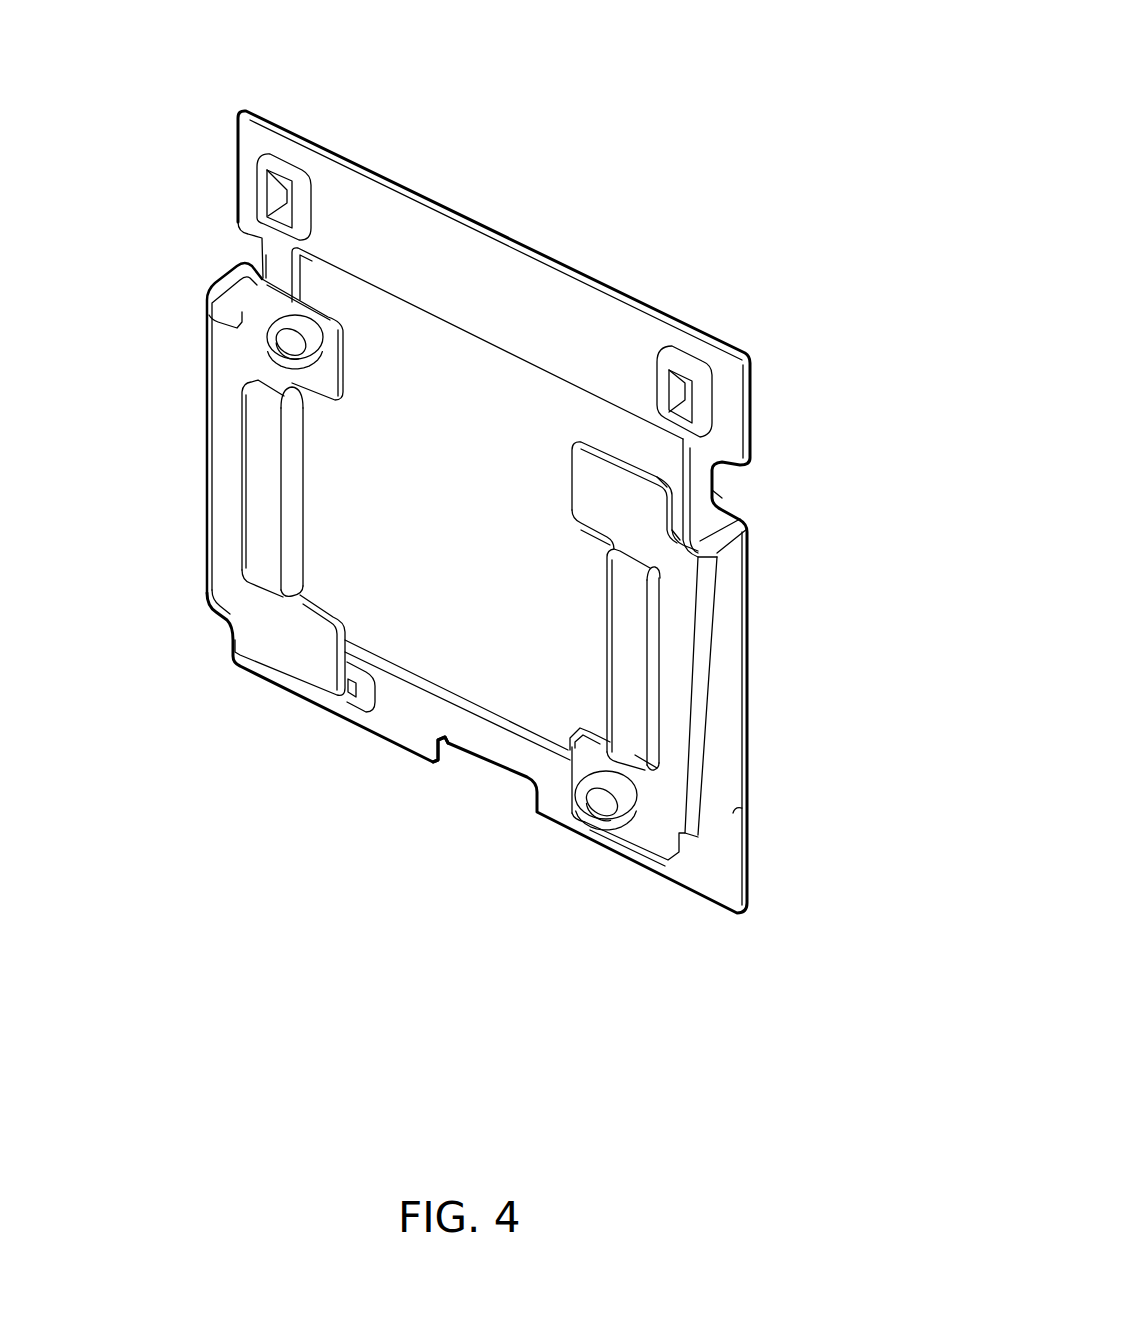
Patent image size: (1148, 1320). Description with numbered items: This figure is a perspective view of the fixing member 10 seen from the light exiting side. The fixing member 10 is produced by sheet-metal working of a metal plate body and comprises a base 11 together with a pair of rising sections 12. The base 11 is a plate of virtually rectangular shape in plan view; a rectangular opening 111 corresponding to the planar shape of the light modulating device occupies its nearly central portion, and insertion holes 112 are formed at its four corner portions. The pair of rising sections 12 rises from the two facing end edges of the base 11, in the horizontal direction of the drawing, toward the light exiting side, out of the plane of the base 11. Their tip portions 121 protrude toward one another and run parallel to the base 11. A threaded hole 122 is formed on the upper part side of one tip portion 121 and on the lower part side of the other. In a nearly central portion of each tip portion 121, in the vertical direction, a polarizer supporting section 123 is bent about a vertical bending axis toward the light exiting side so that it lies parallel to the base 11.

The fixing member 10 is at (676, 108).
The base 11 is at (532, 277).
The rectangular opening 111 is at (424, 665).
The insertion holes 112 is at (273, 187).
The rising sections 12 is at (223, 415).
The tip portions 121 is at (270, 650).
The threaded hole 122 is at (292, 342).
The polarizer supporting section 123 is at (253, 530).